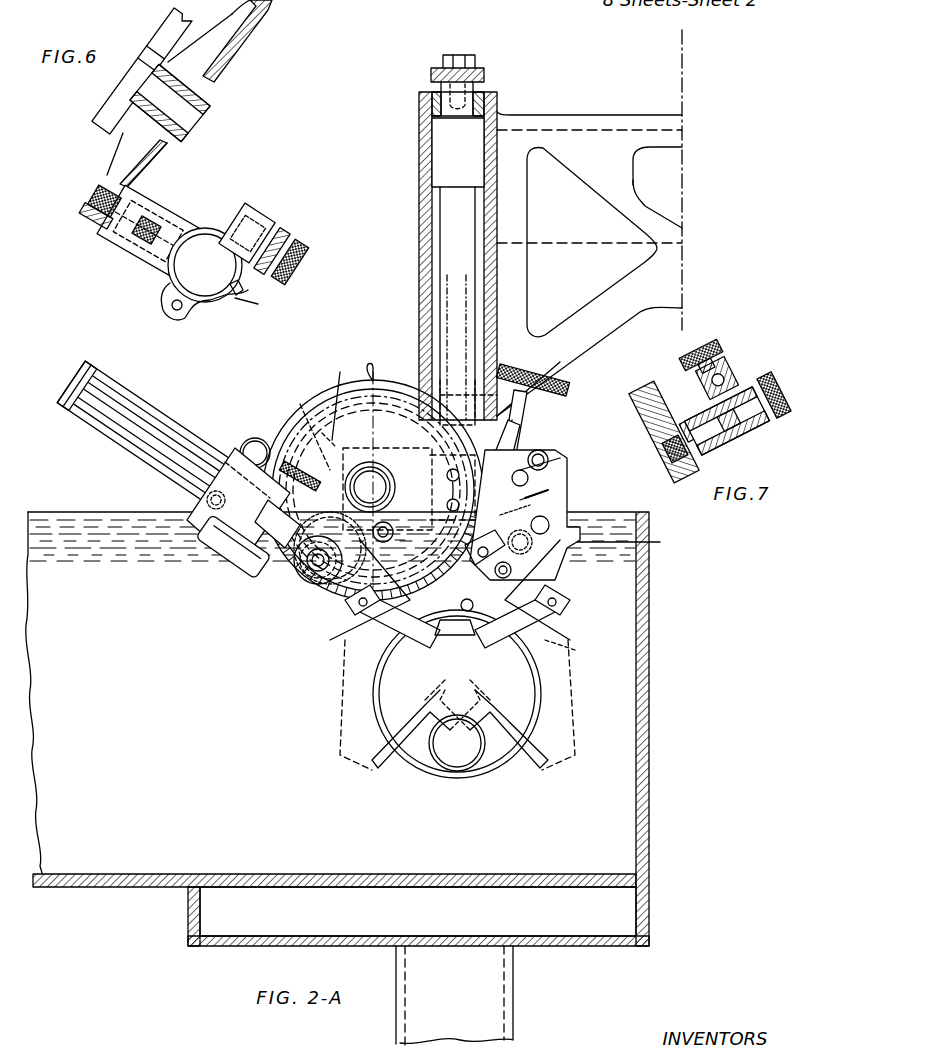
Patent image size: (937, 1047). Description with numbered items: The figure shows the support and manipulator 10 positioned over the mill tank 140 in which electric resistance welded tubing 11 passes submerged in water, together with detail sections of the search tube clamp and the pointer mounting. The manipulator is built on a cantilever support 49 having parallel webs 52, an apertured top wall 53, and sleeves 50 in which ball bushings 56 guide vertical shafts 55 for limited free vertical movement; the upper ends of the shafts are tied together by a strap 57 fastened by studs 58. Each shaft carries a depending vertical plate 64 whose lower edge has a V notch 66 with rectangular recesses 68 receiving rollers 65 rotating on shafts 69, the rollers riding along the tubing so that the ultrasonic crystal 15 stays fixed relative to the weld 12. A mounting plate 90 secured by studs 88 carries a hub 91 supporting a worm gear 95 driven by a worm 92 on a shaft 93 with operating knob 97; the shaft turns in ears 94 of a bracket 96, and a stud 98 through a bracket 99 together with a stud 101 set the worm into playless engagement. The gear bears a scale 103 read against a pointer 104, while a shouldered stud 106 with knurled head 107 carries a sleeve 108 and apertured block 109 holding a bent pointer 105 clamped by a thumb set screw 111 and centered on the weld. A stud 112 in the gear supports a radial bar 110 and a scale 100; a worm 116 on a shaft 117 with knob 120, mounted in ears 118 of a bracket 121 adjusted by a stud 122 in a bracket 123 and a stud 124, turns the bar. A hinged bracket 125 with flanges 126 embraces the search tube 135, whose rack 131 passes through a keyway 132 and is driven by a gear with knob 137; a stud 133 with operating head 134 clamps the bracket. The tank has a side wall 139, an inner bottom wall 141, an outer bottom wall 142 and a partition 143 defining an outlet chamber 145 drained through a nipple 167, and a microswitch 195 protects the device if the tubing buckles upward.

In FIG. 2-A, the support and manipulator 10 is at (578, 86).
In FIG. 2-A, the tubing 11 is at (538, 710).
In FIG. 2-A, the resistance weld 12 is at (457, 670).
In FIG. 2-A, the ultrasonic crystal 15 is at (310, 555).
In FIG. 2-A, the cantilever support 49 is at (636, 113).
In FIG. 2-A, the sleeve 50 is at (484, 244).
In FIG. 2-A, the web 52 is at (633, 200).
In FIG. 2-A, the apertured top wall 53 is at (612, 130).
In FIG. 2-A, the vertical shaft 55 is at (456, 285).
In FIG. 2-A, the ball bushing 56 is at (465, 155).
In FIG. 2-A, the strap 57 is at (485, 78).
In FIG. 2-A, the stud 58 is at (462, 58).
In FIG. 2-A, the vertical plate 64 is at (540, 562).
In FIG. 2-A, the roller 65 is at (392, 632).
In FIG. 2-A, the V notch 66 is at (461, 596).
In FIG. 2-A, the rectangular recess 68 is at (355, 630).
In FIG. 2-A, the shaft 69 is at (575, 644).
In FIG. 2-A, the stud 88 is at (547, 456).
In FIG. 2-A, the mounting plate 90 is at (548, 466).
In FIG. 6, the mounting plate 90 is at (176, 24).
In FIG. 7, the mounting plate 90 is at (655, 388).
In FIG. 6, the hub 91 is at (188, 125).
In FIG. 2-A, the worm 92 is at (445, 491).
In FIG. 2-A, the shaft 93 is at (524, 416).
In FIG. 2-A, the ear 94 is at (501, 462).
In FIG. 6, the worm gear 95 is at (262, 20).
In FIG. 2-A, the bracket 96 is at (490, 510).
In FIG. 2-A, the operating knob 97 is at (565, 382).
In FIG. 2-A, the stud 98 is at (545, 508).
In FIG. 2-A, the bracket 99 is at (570, 496).
In FIG. 7, the bracket 99 is at (659, 452).
In FIG. 2-A, the scale 100 is at (300, 595).
In FIG. 2-A, the stud 101 is at (575, 455).
In FIG. 2-A, the scale 103 is at (306, 395).
In FIG. 2-A, the pointer 104 is at (378, 378).
In FIG. 2-A, the bent pointer 105 is at (455, 605).
In FIG. 7, the shouldered stud 106 is at (728, 440).
In FIG. 2-A, the knurled operating head 107 is at (660, 542).
In FIG. 7, the knurled operating head 107 is at (773, 375).
In FIG. 7, the sleeve 108 is at (700, 408).
In FIG. 7, the apertured block 109 is at (725, 372).
In FIG. 6, the radial bar 110 is at (165, 222).
In FIG. 2-A, the thumb set screw 111 is at (555, 488).
In FIG. 7, the thumb set screw 111 is at (705, 345).
In FIG. 6, the stud 112 is at (97, 194).
In FIG. 2-A, the worm 116 is at (388, 522).
In FIG. 2-A, the shaft 117 is at (344, 429).
In FIG. 2-A, the ear 118 is at (355, 582).
In FIG. 2-A, the operating knob 120 is at (288, 465).
In FIG. 2-A, the bracket 121 is at (305, 400).
In FIG. 2-A, the stud 122 is at (370, 479).
In FIG. 2-A, the bracket 123 is at (378, 466).
In FIG. 2-A, the stud 124 is at (342, 395).
In FIG. 2-A, the hinged bracket 125 is at (243, 333).
In FIG. 6, the hinged bracket 125 is at (205, 298).
In FIG. 6, the flange 126 is at (172, 222).
In FIG. 2-A, the rack 131 is at (108, 436).
In FIG. 6, the keyway 132 is at (258, 304).
In FIG. 6, the stud 133 is at (262, 232).
In FIG. 2-A, the operating head 134 is at (250, 442).
In FIG. 6, the operating head 134 is at (306, 262).
In FIG. 2-A, the search tube 135 is at (108, 380).
In FIG. 6, the operating knob 137 is at (282, 247).
In FIG. 2-A, the side wall 139 is at (649, 812).
In FIG. 2-A, the mill tank 140 is at (157, 774).
In FIG. 2-A, the inner bottom wall 141 is at (343, 873).
In FIG. 2-A, the outer bottom wall 142 is at (232, 946).
In FIG. 2-A, the partition 143 is at (188, 915).
In FIG. 2-A, the outlet chamber 145 is at (374, 922).
In FIG. 2-A, the nipple 167 is at (513, 1002).
In FIG. 2-A, the microswitch 195 is at (440, 360).